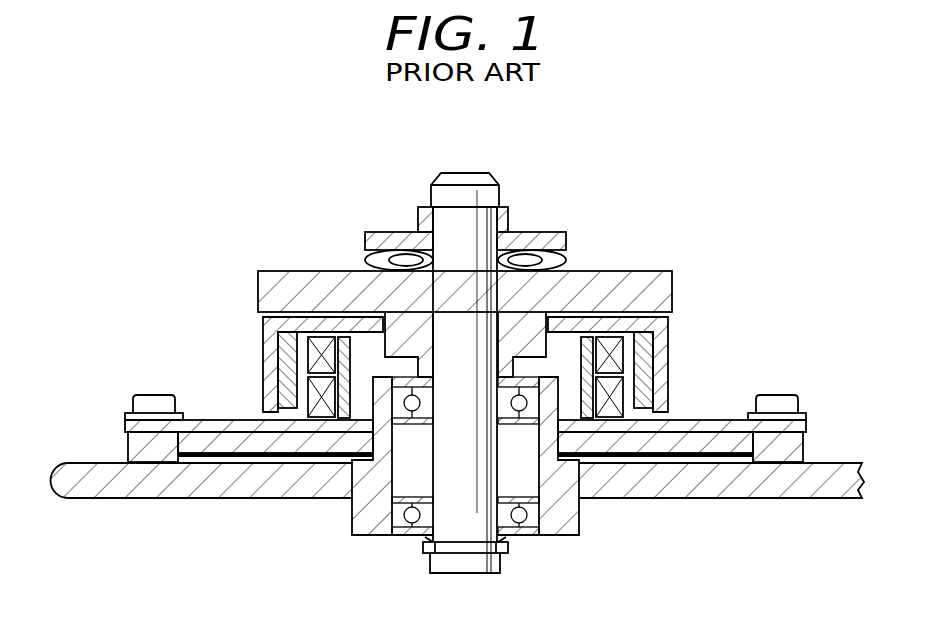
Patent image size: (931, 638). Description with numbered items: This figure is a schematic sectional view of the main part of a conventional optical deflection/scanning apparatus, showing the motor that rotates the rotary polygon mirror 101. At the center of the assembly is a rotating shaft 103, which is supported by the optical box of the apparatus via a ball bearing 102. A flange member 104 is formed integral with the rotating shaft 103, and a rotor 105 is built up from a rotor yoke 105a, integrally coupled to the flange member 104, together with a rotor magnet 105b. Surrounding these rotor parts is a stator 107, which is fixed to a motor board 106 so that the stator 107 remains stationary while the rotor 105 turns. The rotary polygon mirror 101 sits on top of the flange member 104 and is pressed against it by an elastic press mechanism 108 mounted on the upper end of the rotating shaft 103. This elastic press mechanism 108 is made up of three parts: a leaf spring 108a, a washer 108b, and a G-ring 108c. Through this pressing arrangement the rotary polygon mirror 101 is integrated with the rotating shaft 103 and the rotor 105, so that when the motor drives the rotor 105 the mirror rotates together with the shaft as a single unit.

The rotary polygon mirror 101 is at (673, 292).
The ball bearing 102 is at (360, 498).
The rotating shaft 103 is at (458, 172).
The flange member 104 is at (538, 330).
The rotor 105 is at (556, 364).
The rotor yoke 105a is at (660, 351).
The rotor magnet 105b is at (654, 378).
The motor board 106 is at (675, 418).
The stator 107 is at (323, 412).
The elastic press mechanism 108 is at (389, 191).
The leaf spring 108a is at (385, 157).
The washer 108b is at (363, 240).
The G-ring 108c is at (417, 222).